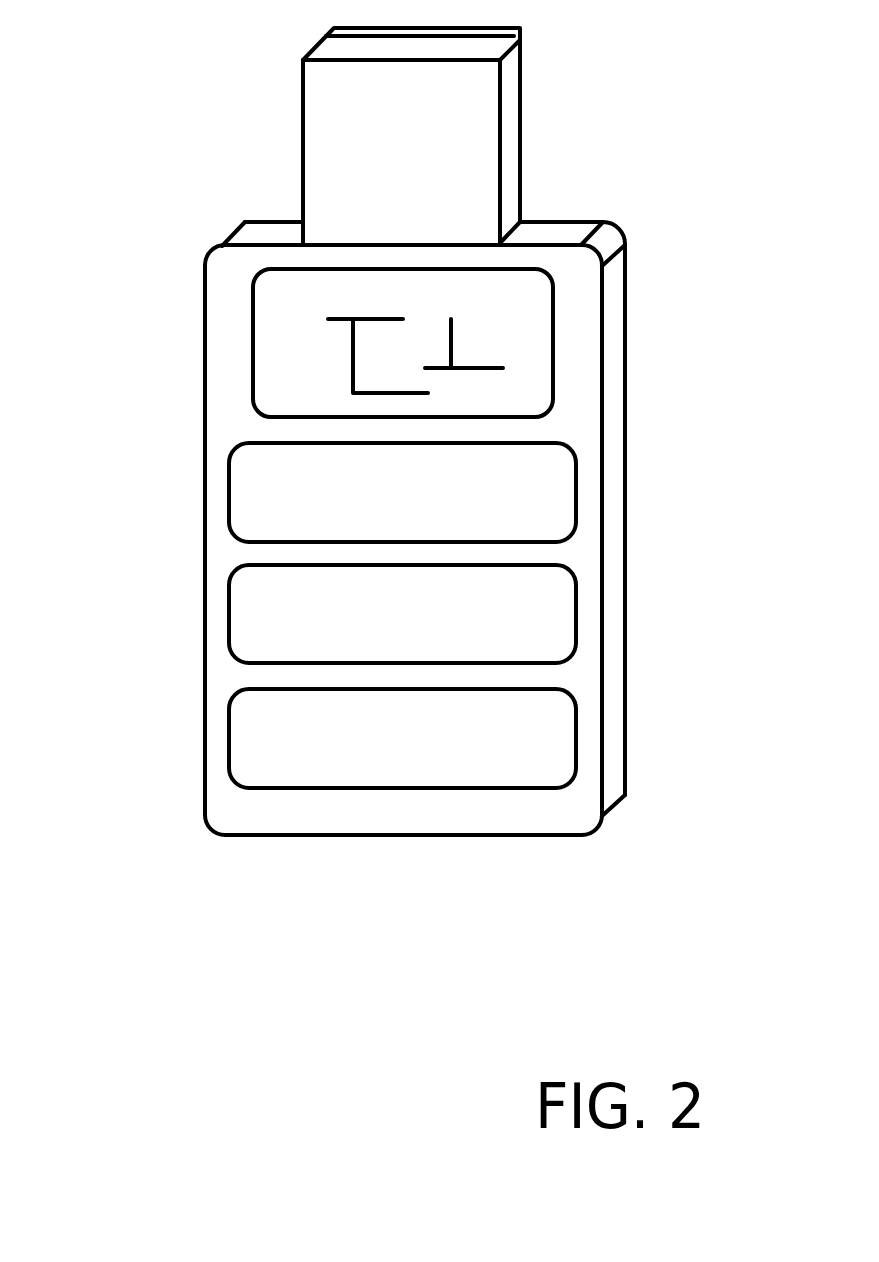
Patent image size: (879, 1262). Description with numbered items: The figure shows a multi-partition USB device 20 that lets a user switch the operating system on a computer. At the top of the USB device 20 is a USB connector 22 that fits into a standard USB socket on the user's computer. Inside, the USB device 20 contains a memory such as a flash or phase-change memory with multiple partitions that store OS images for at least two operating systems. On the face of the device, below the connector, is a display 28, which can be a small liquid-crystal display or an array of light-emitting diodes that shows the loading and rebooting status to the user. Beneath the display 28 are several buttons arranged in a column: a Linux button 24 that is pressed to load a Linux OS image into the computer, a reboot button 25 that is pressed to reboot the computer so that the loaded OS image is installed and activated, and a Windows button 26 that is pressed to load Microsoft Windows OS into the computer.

The USB device 20 is at (400, 837).
The USB connector 22 is at (433, 188).
The Linux button 24 is at (570, 502).
The reboot button 25 is at (570, 613).
The Windows button 26 is at (570, 735).
The display 28 is at (275, 357).